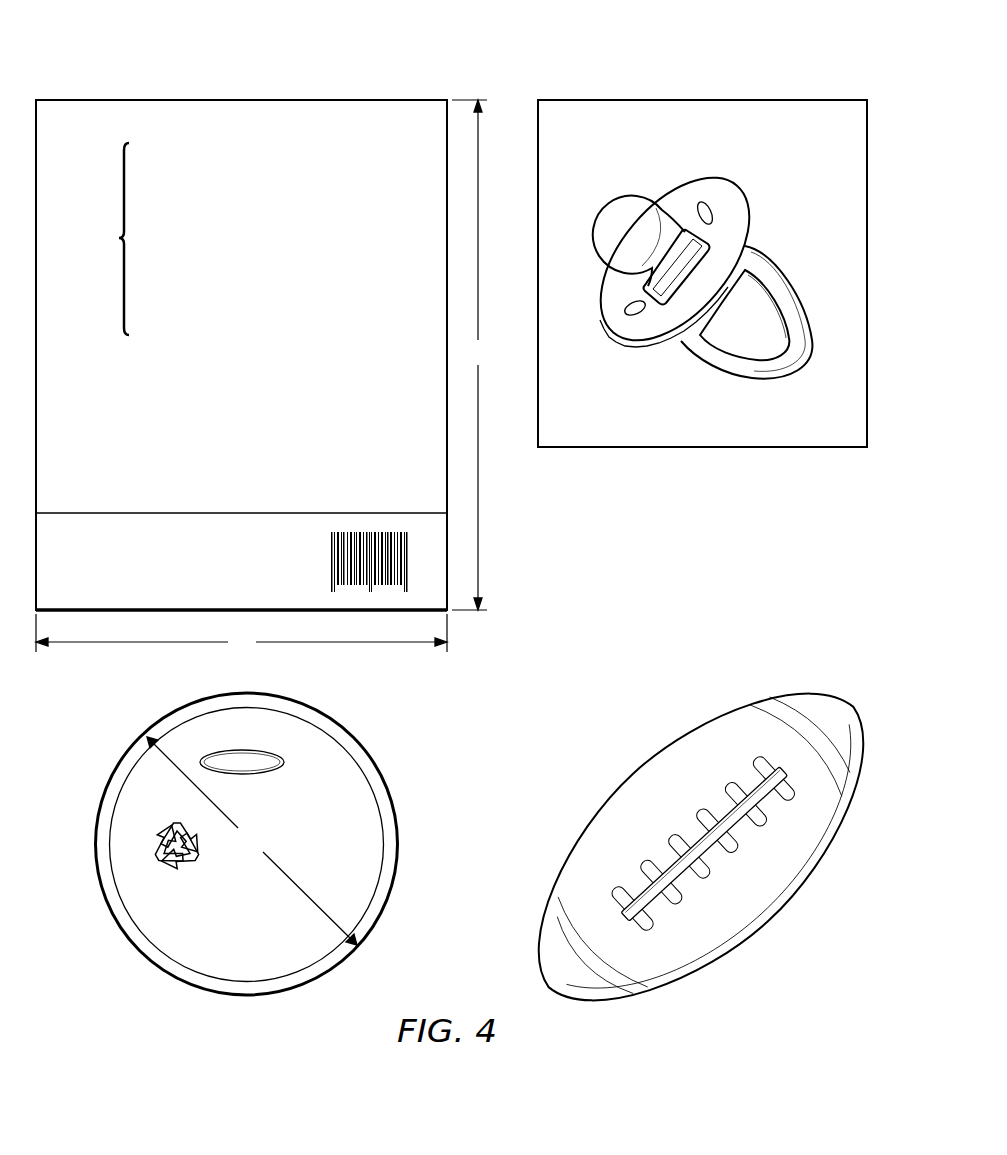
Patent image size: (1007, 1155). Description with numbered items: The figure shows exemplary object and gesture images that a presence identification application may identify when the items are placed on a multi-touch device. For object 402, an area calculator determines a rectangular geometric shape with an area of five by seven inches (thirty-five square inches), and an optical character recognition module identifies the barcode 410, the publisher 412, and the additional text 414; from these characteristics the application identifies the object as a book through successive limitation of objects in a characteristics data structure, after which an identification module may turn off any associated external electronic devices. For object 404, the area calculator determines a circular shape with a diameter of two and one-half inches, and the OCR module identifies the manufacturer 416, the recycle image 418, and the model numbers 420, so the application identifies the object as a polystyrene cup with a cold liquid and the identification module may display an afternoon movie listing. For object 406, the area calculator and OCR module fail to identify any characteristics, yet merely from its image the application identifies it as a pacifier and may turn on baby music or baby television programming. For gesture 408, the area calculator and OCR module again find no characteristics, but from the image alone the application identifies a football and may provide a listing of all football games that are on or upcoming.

The object 402 is at (142, 94).
The object 404 is at (118, 949).
The object 406 is at (702, 98).
The gesture 408 is at (777, 695).
The barcode 410 is at (303, 552).
The publisher 412 is at (170, 564).
The additional text 414 is at (206, 239).
The manufacturer 416 is at (258, 775).
The recycle image 418 is at (173, 820).
The model numbers 420 is at (330, 812).